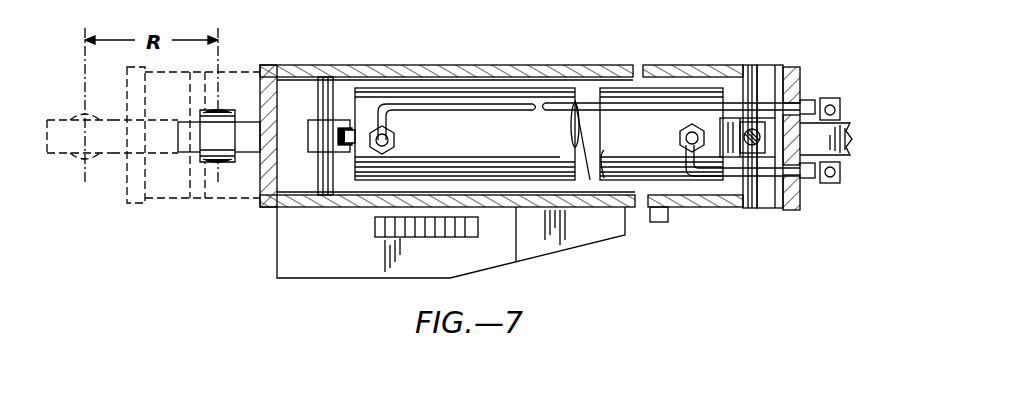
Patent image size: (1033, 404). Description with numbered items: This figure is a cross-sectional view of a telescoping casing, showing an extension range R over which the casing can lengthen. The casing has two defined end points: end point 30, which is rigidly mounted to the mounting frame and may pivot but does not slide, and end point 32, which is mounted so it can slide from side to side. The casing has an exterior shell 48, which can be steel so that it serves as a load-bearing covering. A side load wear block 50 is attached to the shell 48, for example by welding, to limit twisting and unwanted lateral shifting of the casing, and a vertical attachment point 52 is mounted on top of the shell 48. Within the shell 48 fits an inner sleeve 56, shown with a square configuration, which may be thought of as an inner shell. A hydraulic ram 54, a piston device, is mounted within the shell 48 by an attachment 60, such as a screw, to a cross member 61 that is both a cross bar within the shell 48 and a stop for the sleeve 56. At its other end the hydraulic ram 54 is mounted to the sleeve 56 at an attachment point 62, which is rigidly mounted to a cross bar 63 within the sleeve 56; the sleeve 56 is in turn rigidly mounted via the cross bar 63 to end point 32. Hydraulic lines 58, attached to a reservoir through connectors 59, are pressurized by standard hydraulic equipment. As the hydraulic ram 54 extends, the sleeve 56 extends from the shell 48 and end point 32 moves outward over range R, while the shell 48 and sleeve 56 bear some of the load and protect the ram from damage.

The end point 30 is at (850, 135).
The end point 32 is at (230, 136).
The exterior shell 48 is at (563, 66).
The side load wear block 50 is at (660, 223).
The vertical attachment point 52 is at (375, 226).
The hydraulic ram 54 is at (600, 160).
The inner sleeve 56 is at (445, 68).
The hydraulic lines 58 is at (747, 80).
The connectors 59 is at (830, 98).
The attachment 60 is at (772, 125).
The cross member 61 is at (742, 108).
The attachment point 62 is at (322, 130).
The cross bar 63 is at (340, 122).